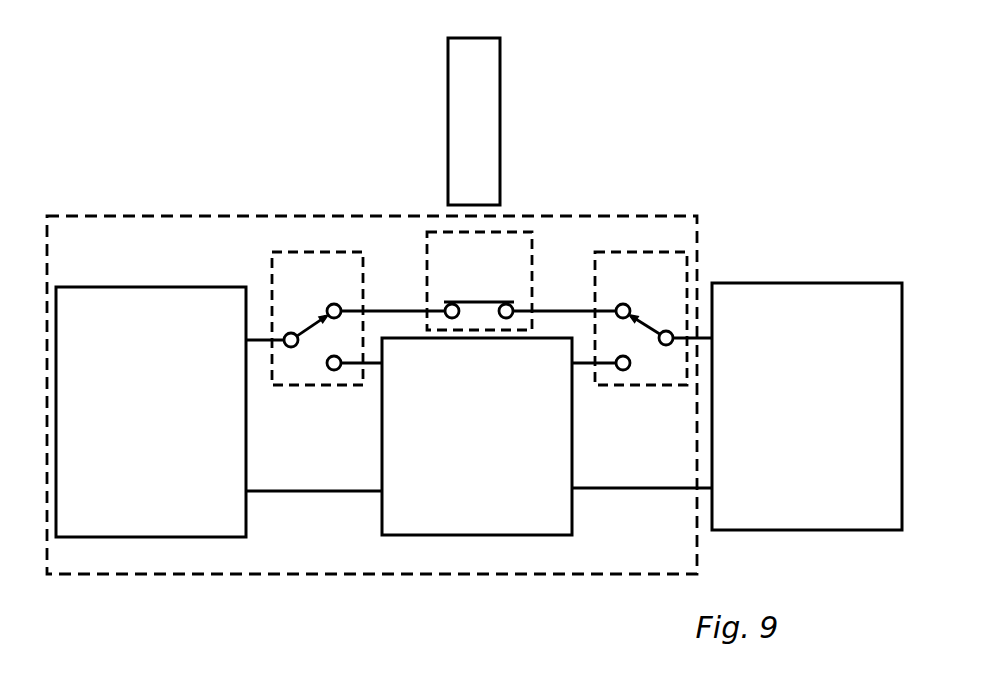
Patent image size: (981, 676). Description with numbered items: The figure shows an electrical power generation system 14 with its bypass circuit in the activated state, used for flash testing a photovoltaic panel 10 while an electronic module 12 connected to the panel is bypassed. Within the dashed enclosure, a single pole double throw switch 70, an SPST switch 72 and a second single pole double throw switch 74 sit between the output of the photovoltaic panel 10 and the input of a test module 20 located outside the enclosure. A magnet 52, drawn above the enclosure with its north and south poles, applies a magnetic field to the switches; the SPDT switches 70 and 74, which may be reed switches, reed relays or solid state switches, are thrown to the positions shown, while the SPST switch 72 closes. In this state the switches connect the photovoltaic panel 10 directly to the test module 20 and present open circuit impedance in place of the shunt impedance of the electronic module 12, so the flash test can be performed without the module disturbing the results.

The photovoltaic panel 10 is at (151, 412).
The electronic module 12 is at (477, 436).
The electrical power generation system 14 is at (275, 575).
The test module 20 is at (807, 406).
The magnet 52 is at (500, 115).
The single pole double throw switch 70 is at (317, 318).
The SPST switch 72 is at (479, 281).
The single pole double throw switch 74 is at (641, 318).